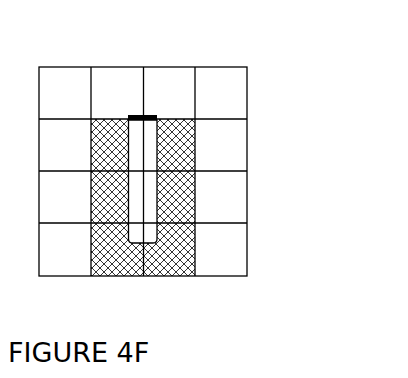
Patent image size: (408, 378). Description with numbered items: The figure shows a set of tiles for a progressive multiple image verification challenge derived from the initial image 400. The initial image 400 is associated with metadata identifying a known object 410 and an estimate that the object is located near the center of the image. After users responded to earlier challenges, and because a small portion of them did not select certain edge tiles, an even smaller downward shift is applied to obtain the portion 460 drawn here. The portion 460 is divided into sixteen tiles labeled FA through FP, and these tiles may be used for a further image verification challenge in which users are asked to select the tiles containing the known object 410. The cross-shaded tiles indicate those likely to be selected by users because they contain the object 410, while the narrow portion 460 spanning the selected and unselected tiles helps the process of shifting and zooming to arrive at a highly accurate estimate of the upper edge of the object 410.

The initial image 400 is at (248, 134).
The known object 410 is at (193, 193).
The portion 460 is at (147, 116).